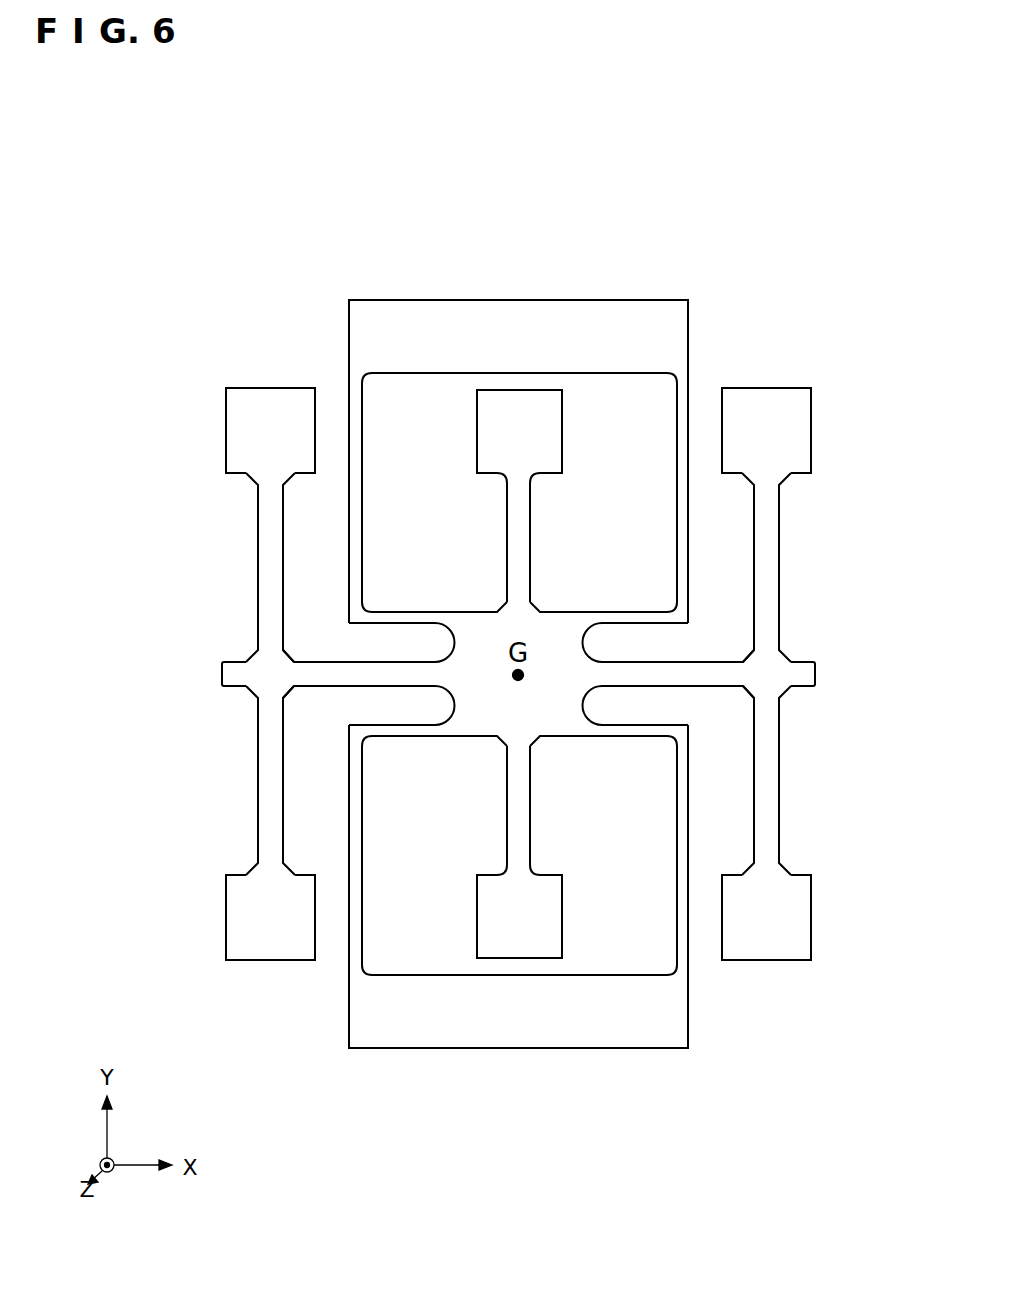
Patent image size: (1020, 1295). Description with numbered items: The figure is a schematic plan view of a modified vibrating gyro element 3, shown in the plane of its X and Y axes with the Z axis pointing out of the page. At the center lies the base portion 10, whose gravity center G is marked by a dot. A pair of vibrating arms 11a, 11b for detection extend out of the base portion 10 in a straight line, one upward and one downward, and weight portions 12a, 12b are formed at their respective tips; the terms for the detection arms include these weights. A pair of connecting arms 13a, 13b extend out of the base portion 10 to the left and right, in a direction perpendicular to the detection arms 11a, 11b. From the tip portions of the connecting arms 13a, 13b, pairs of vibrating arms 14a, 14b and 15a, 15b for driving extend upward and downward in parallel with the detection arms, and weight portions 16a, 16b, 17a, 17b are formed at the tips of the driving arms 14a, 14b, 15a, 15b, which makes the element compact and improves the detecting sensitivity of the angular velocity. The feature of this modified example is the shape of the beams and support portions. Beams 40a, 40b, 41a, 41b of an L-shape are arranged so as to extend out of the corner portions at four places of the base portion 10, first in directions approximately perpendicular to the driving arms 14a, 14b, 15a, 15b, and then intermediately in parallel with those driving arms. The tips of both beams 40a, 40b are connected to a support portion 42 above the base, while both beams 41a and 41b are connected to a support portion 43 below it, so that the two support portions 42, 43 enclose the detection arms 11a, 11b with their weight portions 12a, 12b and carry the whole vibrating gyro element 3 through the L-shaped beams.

The vibrating gyro element 3 is at (830, 242).
The base portion 10 is at (585, 699).
The vibrating arm for detection 11a is at (523, 520).
The vibrating arm for detection 11b is at (523, 824).
The weight portion 12a is at (552, 431).
The weight portion 12b is at (552, 916).
The connecting arm 13a is at (316, 670).
The connecting arm 13b is at (716, 670).
The vibrating arm for driving 14a is at (268, 563).
The vibrating arm for driving 14b is at (268, 776).
The vibrating arm for driving 15a is at (769, 563).
The vibrating arm for driving 15b is at (769, 776).
The weight portion 16a is at (238, 430).
The weight portion 16b is at (238, 914).
The weight portion 17a is at (799, 430).
The weight portion 17b is at (799, 914).
The beam 40a is at (357, 560).
The beam 40b is at (683, 560).
The beam 41a is at (357, 799).
The beam 41b is at (683, 799).
The support portion 42 is at (517, 310).
The support portion 43 is at (520, 1040).